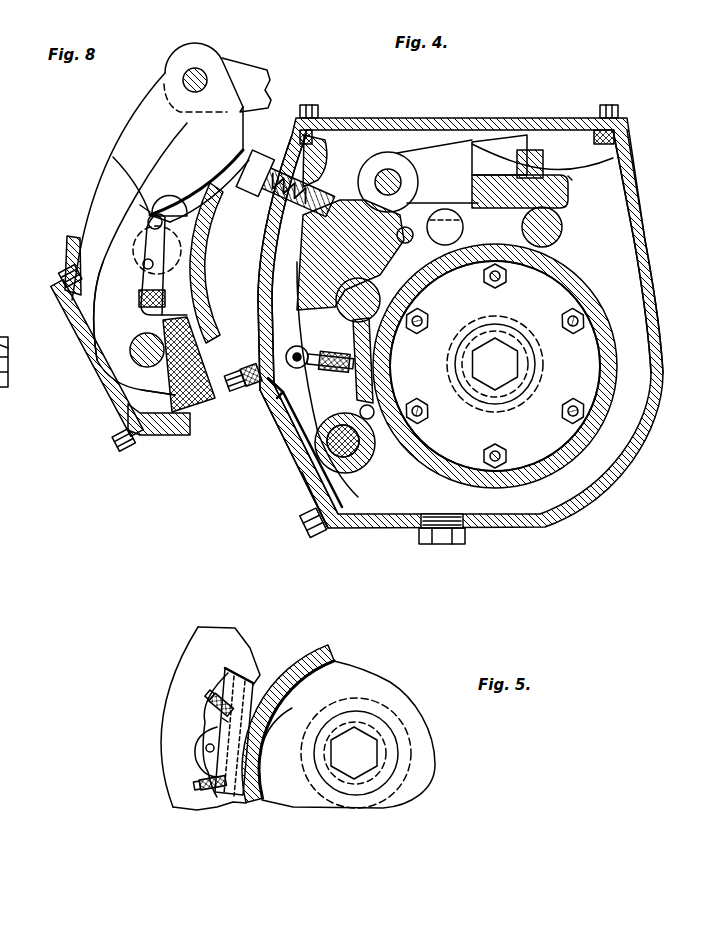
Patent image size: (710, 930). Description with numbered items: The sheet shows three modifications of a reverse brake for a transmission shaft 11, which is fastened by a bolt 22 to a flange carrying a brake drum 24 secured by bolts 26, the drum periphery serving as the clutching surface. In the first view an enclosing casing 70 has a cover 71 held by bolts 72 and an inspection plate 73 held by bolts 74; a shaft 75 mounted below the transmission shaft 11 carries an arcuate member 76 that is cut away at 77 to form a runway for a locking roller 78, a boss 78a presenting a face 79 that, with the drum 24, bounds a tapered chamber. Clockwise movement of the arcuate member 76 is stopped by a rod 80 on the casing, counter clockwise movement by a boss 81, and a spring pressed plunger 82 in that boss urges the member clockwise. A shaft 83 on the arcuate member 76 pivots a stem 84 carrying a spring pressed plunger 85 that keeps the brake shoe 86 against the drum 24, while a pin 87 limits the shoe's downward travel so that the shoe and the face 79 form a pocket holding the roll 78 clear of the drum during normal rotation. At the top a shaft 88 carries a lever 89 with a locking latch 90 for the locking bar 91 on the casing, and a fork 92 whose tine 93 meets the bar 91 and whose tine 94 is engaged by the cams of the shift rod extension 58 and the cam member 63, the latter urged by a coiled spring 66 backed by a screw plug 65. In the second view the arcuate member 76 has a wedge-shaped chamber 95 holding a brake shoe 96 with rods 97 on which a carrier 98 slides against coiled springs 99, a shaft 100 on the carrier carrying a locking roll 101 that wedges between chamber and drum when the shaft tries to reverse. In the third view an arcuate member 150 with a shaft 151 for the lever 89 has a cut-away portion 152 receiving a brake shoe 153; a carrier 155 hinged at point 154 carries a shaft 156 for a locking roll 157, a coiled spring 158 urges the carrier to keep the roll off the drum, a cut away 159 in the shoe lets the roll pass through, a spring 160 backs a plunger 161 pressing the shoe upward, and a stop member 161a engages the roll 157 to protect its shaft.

In FIG. 4, the transmission shaft 11 is at (483, 345).
In FIG. 5, the transmission shaft 11 is at (367, 723).
In FIG. 4, the bolt 22 is at (503, 377).
In FIG. 5, the bolt 22 is at (367, 757).
In FIG. 4, the drum 24 is at (613, 358).
In FIG. 8, the drum 24 is at (180, 160).
In FIG. 5, the drum 24 is at (320, 650).
In FIG. 4, the bolts 26 is at (565, 318).
In FIG. 4, the extension 58 is at (433, 237).
In FIG. 4, the cam member 63 is at (563, 229).
In FIG. 8, the screw plug 65 is at (8, 340).
In FIG. 8, the coiled spring 66 is at (9, 382).
In FIG. 4, the enclosing casing 70 is at (653, 238).
In FIG. 8, the enclosing casing 70 is at (66, 255).
In FIG. 4, the cover 71 is at (392, 118).
In FIG. 4, the bolts 72 is at (308, 104).
In FIG. 4, the inspection plate 73 is at (298, 466).
In FIG. 8, the inspection plate 73 is at (100, 345).
In FIG. 4, the bolts 74 is at (243, 400).
In FIG. 8, the bolts 74 is at (40, 296).
In FIG. 4, the shaft 75 is at (348, 457).
In FIG. 8, the shaft 75 is at (135, 362).
In FIG. 4, the arcuate member 76 is at (297, 323).
In FIG. 5, the arcuate member 76 is at (162, 711).
In FIG. 4, the cut away portion 77 is at (345, 257).
In FIG. 4, the locking roller 78 is at (360, 308).
In FIG. 4, the boss 78a is at (314, 492).
In FIG. 4, the face 79 is at (266, 266).
In FIG. 4, the rod 80 is at (407, 226).
In FIG. 4, the boss 81 is at (320, 180).
In FIG. 4, the spring pressed plunger 82 is at (268, 205).
In FIG. 4, the shaft 83 is at (290, 356).
In FIG. 4, the stem 84 is at (283, 394).
In FIG. 4, the spring pressed plunger 85 is at (330, 352).
In FIG. 4, the brake shoe 86 is at (360, 398).
In FIG. 4, the pin 87 is at (378, 420).
In FIG. 4, the shaft 88 is at (392, 178).
In FIG. 4, the lever 89 is at (503, 206).
In FIG. 8, the lever 89 is at (253, 80).
In FIG. 4, the locking latch 90 is at (610, 162).
In FIG. 4, the locking bar 91 is at (538, 158).
In FIG. 4, the fork 92 is at (458, 148).
In FIG. 4, the tine 93 is at (512, 140).
In FIG. 4, the tine 94 is at (570, 178).
In FIG. 5, the wedge-shaped chamber 95 is at (205, 707).
In FIG. 5, the brake shoe 96 is at (285, 718).
In FIG. 5, the rods or shafts 97 is at (211, 696).
In FIG. 5, the carrier 98 is at (222, 718).
In FIG. 5, the coiled springs 99 is at (233, 668).
In FIG. 5, the shaft 100 is at (205, 750).
In FIG. 5, the locking roll 101 is at (192, 737).
In FIG. 8, the arcuate member 150 is at (110, 187).
In FIG. 8, the shaft 151 is at (200, 75).
In FIG. 8, the cut-away portion 152 is at (143, 207).
In FIG. 8, the brake shoe 153 is at (169, 199).
In FIG. 8, the point 154 is at (114, 179).
In FIG. 8, the carrier 155 is at (141, 237).
In FIG. 8, the shaft 156 is at (146, 270).
In FIG. 8, the locking roll 157 is at (133, 250).
In FIG. 8, the coiled spring 158 is at (143, 328).
In FIG. 8, the cut away 159 is at (203, 246).
In FIG. 8, the spring 160 is at (160, 410).
In FIG. 8, the plunger 161 is at (134, 350).
In FIG. 8, the stop member 161a is at (183, 173).